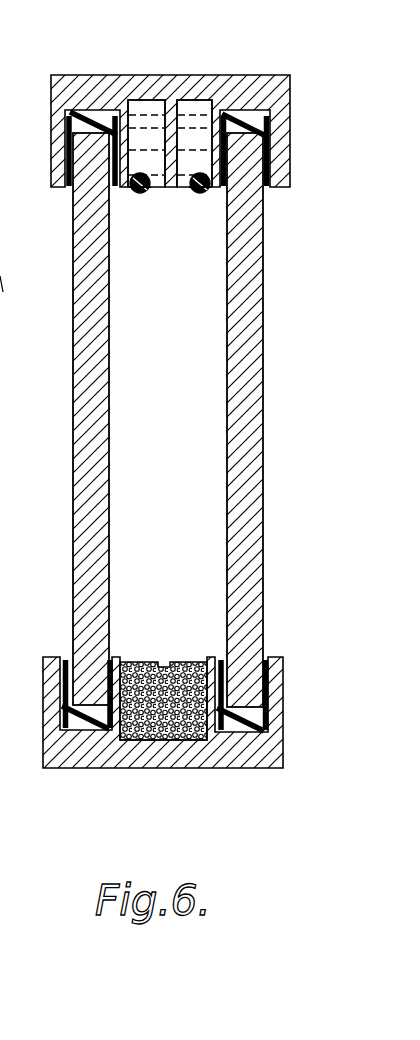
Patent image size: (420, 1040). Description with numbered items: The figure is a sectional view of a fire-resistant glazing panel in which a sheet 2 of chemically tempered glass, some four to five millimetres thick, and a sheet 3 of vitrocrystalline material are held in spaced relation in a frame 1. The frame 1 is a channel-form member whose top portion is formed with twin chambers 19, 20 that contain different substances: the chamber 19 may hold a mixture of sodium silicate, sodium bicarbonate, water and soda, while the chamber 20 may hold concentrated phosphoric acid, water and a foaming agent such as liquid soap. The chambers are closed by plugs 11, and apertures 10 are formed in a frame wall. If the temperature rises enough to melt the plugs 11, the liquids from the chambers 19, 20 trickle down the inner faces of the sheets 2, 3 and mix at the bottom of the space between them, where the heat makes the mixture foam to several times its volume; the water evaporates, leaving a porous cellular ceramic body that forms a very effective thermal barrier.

The frame 1 is at (298, 111).
The sheet 2 is at (70, 387).
The sheet 3 is at (272, 391).
The apertures 10 is at (163, 663).
The plugs 11 is at (138, 193).
The chamber 19 is at (203, 190).
The chamber 20 is at (143, 195).